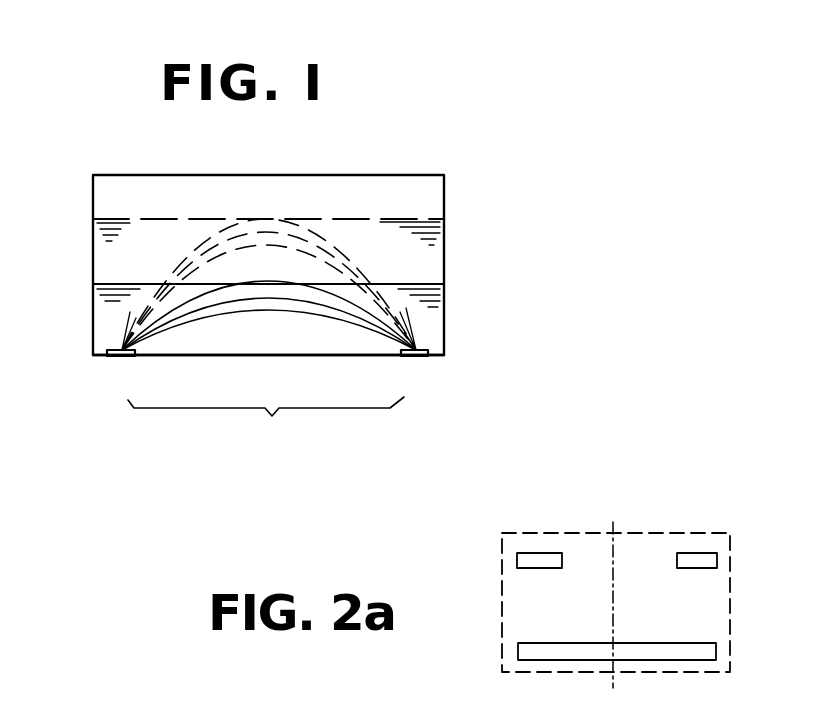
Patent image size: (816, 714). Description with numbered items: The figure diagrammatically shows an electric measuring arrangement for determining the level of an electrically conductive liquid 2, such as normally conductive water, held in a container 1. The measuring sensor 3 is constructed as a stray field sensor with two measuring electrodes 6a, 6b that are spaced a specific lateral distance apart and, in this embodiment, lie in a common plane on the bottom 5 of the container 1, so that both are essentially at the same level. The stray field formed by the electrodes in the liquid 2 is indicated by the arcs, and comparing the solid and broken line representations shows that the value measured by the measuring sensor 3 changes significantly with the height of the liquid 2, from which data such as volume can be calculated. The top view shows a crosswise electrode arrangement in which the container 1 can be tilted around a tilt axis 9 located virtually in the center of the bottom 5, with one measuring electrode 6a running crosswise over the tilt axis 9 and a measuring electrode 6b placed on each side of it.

In FIG. 1, the container 1 is at (444, 235).
In FIG. 2a, the container 1 is at (500, 607).
In FIG. 1, the liquid 2 is at (437, 315).
In FIG. 1, the measuring sensor 3 is at (266, 426).
In FIG. 1, the bottom 5 is at (332, 357).
In FIG. 1, the measuring electrode 6a is at (112, 357).
In FIG. 2a, the measuring electrode 6a is at (518, 652).
In FIG. 1, the measuring electrode 6b is at (425, 357).
In FIG. 2a, the measuring electrode 6b is at (690, 560).
In FIG. 2a, the tilt axis 9 is at (612, 678).